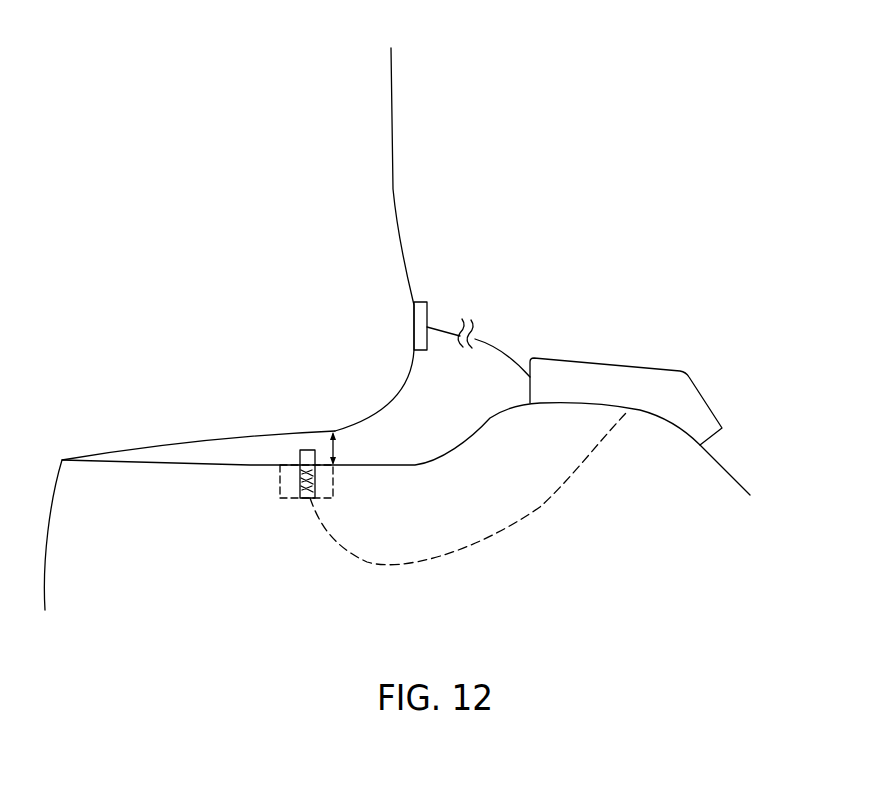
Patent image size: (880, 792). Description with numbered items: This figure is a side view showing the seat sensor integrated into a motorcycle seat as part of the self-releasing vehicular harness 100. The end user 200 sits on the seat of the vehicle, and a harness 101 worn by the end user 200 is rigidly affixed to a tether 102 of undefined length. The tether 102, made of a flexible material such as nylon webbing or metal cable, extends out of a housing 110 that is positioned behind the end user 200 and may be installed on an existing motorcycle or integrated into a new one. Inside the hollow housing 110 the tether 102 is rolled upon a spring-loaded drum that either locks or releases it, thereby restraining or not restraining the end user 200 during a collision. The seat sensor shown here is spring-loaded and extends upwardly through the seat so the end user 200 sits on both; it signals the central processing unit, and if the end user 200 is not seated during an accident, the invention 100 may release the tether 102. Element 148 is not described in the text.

The self-releasing vehicular harness 100 is at (214, 274).
The end user 200 is at (393, 189).
The harness 101 is at (426, 306).
The tether 102 is at (495, 347).
The housing 110 is at (618, 370).
The anchoring element 148 is at (300, 450).